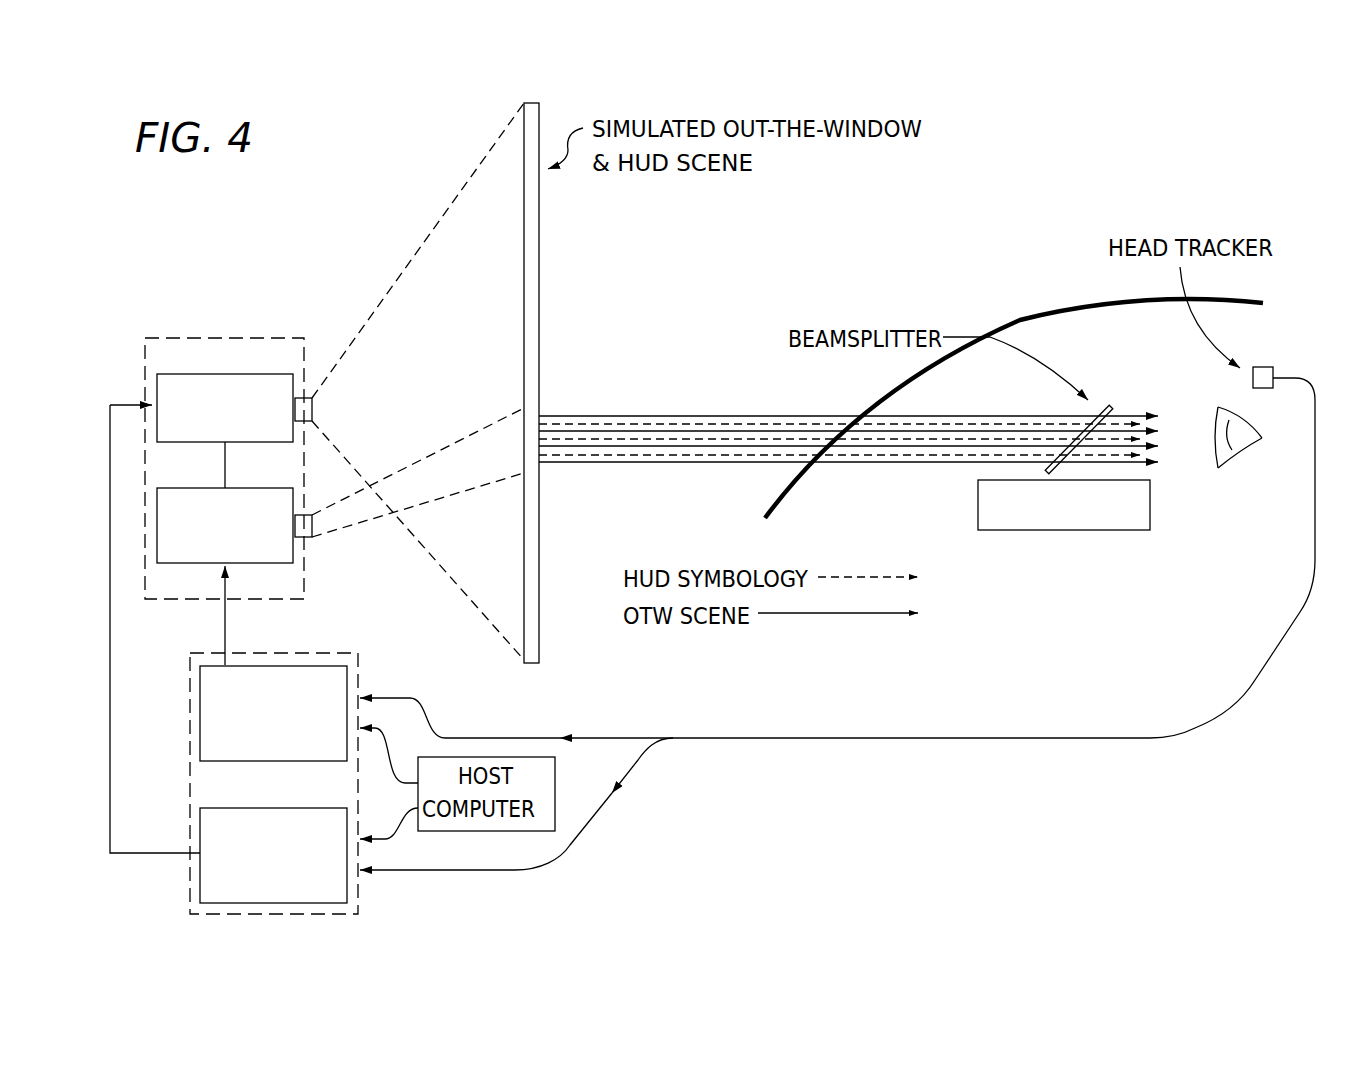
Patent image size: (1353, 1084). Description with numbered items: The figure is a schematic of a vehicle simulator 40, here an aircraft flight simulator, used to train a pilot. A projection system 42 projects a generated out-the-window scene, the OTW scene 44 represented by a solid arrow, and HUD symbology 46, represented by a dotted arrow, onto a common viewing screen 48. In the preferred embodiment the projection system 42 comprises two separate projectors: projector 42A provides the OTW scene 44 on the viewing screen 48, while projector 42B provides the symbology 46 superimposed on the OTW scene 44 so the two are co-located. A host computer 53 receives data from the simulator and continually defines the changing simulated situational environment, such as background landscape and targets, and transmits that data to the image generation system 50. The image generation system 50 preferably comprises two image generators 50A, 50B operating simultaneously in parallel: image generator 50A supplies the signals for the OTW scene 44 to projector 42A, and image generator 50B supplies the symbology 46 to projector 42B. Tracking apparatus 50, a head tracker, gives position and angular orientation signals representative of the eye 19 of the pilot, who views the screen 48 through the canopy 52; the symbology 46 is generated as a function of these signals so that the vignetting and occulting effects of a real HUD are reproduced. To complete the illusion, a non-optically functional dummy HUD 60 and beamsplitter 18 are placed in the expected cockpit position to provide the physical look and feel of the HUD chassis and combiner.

The vehicle simulator 40 is at (1058, 260).
The projection system 42 is at (268, 338).
The projector 42A is at (180, 380).
The projector 42B is at (287, 547).
The OTW scene 44 is at (650, 415).
The symbology 46 is at (702, 424).
The viewing screen 48 is at (540, 338).
The tracking apparatus / image generation system 50 is at (715, 635).
The image generator 50A is at (200, 842).
The image generator 50B is at (200, 698).
The canopy 52 is at (1020, 320).
The host computer 53 is at (562, 848).
The dummy HUD 60 is at (1115, 530).
The beamsplitter 18 is at (1110, 405).
The eye 19 is at (1237, 445).